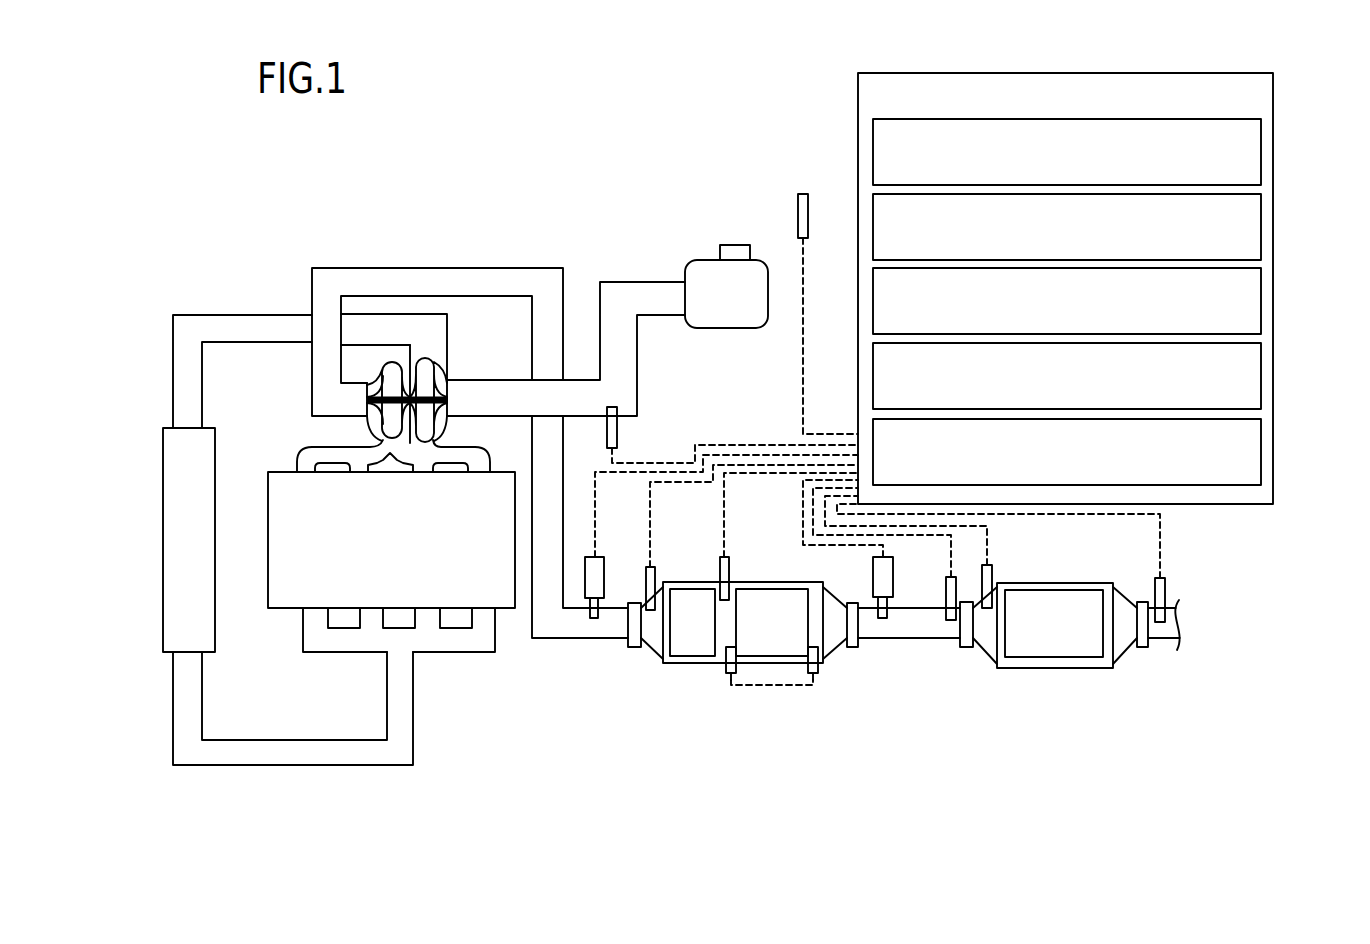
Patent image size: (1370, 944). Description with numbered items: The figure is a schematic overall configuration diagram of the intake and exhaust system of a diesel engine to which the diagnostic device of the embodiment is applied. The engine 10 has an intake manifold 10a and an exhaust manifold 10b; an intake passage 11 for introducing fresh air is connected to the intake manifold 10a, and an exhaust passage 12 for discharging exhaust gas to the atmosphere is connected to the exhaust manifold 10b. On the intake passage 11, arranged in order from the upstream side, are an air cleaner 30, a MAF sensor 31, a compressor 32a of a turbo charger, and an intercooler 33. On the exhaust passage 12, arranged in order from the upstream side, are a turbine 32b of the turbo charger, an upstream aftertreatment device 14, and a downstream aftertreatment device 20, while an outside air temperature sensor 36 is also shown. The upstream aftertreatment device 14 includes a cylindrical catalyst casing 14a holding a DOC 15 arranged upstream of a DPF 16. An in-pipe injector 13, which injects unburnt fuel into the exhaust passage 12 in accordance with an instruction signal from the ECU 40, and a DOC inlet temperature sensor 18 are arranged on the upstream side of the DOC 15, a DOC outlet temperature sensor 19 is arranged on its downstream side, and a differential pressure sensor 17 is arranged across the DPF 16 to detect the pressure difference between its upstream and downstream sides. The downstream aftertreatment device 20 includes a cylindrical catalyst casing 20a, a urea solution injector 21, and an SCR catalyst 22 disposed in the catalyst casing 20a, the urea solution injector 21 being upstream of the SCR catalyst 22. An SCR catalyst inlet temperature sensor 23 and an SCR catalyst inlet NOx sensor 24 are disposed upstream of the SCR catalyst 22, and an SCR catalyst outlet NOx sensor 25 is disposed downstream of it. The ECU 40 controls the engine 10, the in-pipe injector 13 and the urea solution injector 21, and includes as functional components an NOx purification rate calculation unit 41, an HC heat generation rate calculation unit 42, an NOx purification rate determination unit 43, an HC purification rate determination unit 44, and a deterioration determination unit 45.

The engine 10 is at (380, 555).
The intake manifold 10a is at (300, 630).
The exhaust manifold 10b is at (300, 457).
The intake passage 11 is at (233, 315).
The exhaust passage 12 is at (435, 268).
The in-pipe injector 13 is at (593, 556).
The upstream aftertreatment device 14 is at (744, 679).
The catalyst casing 14a is at (695, 665).
The DOC 15 is at (680, 637).
The DPF 16 is at (772, 622).
The differential pressure sensor 17 is at (803, 690).
The DOC inlet temperature sensor 18 is at (648, 568).
The DOC outlet temperature sensor 19 is at (725, 575).
The downstream aftertreatment device 20 is at (1055, 671).
The catalyst casing 20a is at (1010, 669).
The urea solution injector 21 is at (872, 578).
The SCR catalyst 22 is at (1054, 623).
The SCR catalyst inlet temperature sensor 23 is at (993, 578).
The SCR catalyst inlet NOx sensor 24 is at (946, 597).
The SCR catalyst outlet NOx sensor 25 is at (1155, 595).
The air cleaner 30 is at (723, 329).
The MAF sensor 31 is at (620, 429).
The compressor 32a is at (438, 374).
The turbine 32b is at (382, 372).
The intercooler 33 is at (175, 546).
The outside air temperature sensor 36 is at (797, 215).
The ECU 40 is at (1097, 261).
The NOx purification rate calculation unit 41 is at (1263, 153).
The HC heat generation rate calculation unit 42 is at (1263, 228).
The NOx purification rate determination unit 43 is at (1263, 303).
The HC purification rate determination unit 44 is at (1263, 375).
The deterioration determination unit 45 is at (1263, 450).